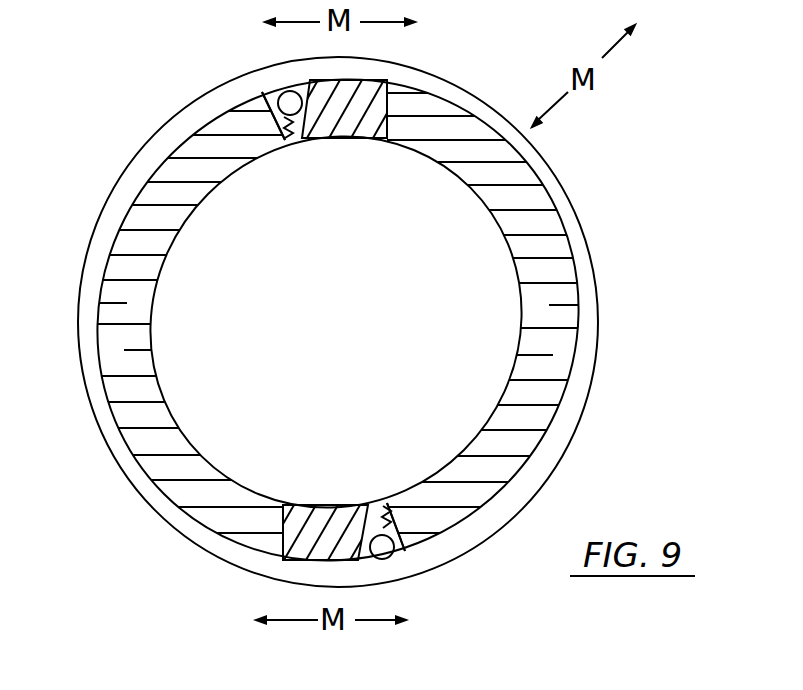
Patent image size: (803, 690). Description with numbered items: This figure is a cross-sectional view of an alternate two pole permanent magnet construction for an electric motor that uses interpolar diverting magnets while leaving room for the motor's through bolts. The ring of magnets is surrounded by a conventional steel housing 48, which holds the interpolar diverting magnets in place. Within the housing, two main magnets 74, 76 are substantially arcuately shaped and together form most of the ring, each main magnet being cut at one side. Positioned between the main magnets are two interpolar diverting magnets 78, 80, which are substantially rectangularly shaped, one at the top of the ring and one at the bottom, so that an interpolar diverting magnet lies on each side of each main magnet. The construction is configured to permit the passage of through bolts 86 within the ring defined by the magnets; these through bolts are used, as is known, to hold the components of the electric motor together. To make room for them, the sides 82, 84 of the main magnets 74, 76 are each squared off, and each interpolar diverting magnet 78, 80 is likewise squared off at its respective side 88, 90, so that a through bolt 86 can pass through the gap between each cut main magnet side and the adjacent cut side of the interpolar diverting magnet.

The steel housing 48 is at (588, 229).
The main magnet 74 is at (554, 187).
The main magnet 76 is at (112, 201).
The interpolar diverting magnet 78 is at (360, 88).
The interpolar diverting magnet 80 is at (310, 556).
The side 82 is at (288, 145).
The side 84 is at (387, 503).
The through bolt 86 is at (279, 100).
The side 88 is at (300, 80).
The side 90 is at (368, 557).